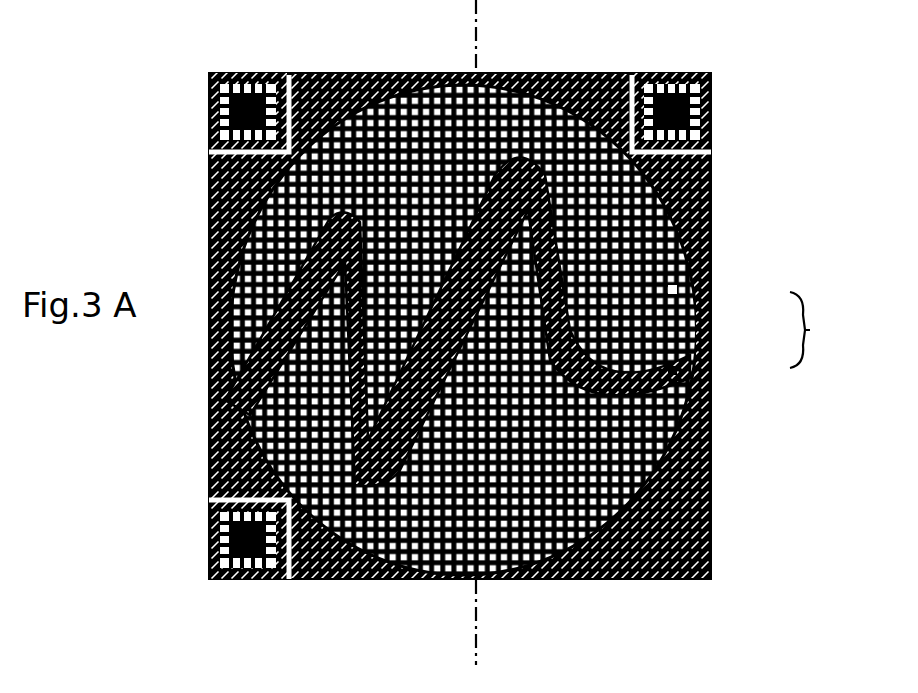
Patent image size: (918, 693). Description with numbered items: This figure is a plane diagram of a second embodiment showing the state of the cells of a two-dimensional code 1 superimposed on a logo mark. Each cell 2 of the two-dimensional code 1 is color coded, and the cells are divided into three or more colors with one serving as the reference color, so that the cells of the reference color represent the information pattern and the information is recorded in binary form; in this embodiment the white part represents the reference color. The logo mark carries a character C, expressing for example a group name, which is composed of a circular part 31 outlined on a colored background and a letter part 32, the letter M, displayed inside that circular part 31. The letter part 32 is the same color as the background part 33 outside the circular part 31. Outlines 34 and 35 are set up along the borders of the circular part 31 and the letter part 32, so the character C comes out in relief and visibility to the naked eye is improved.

The two-dimensional code 1 is at (341, 88).
The cell 2 is at (352, 90).
The circular part 31 is at (711, 313).
The letter part 32 is at (711, 375).
The background part 33 is at (712, 200).
The outline 34 is at (711, 126).
The outline 35 is at (640, 100).
The character C is at (816, 330).